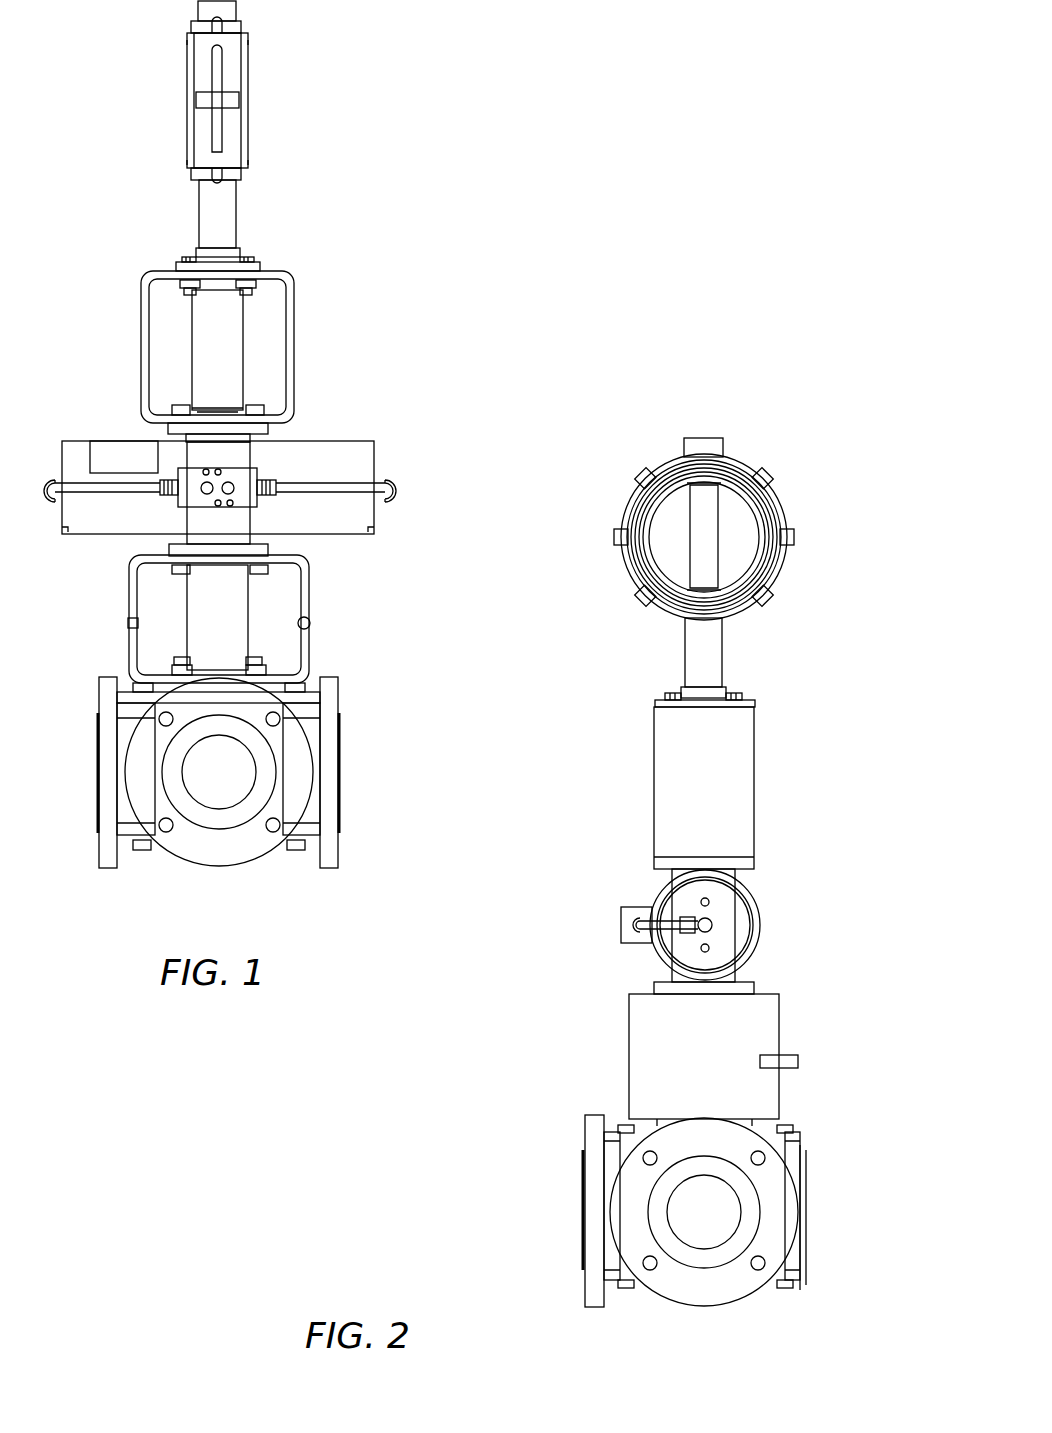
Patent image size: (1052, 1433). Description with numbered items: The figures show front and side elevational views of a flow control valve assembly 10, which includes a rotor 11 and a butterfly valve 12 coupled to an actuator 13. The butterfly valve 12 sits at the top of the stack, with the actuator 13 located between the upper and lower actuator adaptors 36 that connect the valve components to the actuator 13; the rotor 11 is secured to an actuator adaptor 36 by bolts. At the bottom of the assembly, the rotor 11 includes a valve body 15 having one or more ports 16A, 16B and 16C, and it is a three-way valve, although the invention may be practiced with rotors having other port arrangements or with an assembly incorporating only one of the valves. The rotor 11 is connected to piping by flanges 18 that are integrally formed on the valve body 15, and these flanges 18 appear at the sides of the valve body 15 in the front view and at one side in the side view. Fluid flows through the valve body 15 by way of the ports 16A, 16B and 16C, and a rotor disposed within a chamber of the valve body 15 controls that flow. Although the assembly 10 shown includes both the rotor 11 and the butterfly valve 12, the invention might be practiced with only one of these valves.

In FIG. 1, the flow control valve assembly 10 is at (291, 125).
In FIG. 2, the flow control valve assembly 10 is at (808, 642).
In FIG. 1, the rotor 11 is at (348, 672).
In FIG. 2, the rotor 11 is at (570, 1117).
In FIG. 1, the butterfly valve 12 is at (258, 68).
In FIG. 2, the butterfly valve 12 is at (793, 497).
In FIG. 1, the actuator 13 is at (248, 478).
In FIG. 2, the actuator 13 is at (621, 925).
In FIG. 1, the valve body 15 is at (305, 720).
In FIG. 2, the valve body 15 is at (625, 1157).
In FIG. 1, the port 16A is at (97, 770).
In FIG. 1, the port 16B is at (219, 773).
In FIG. 2, the port 16C is at (705, 1212).
In FIG. 1, the flanges 18 is at (99, 848).
In FIG. 2, the flanges 18 is at (585, 1290).
In FIG. 1, the actuator adaptor 36 is at (141, 326).
In FIG. 2, the actuator adaptor 36 is at (654, 748).